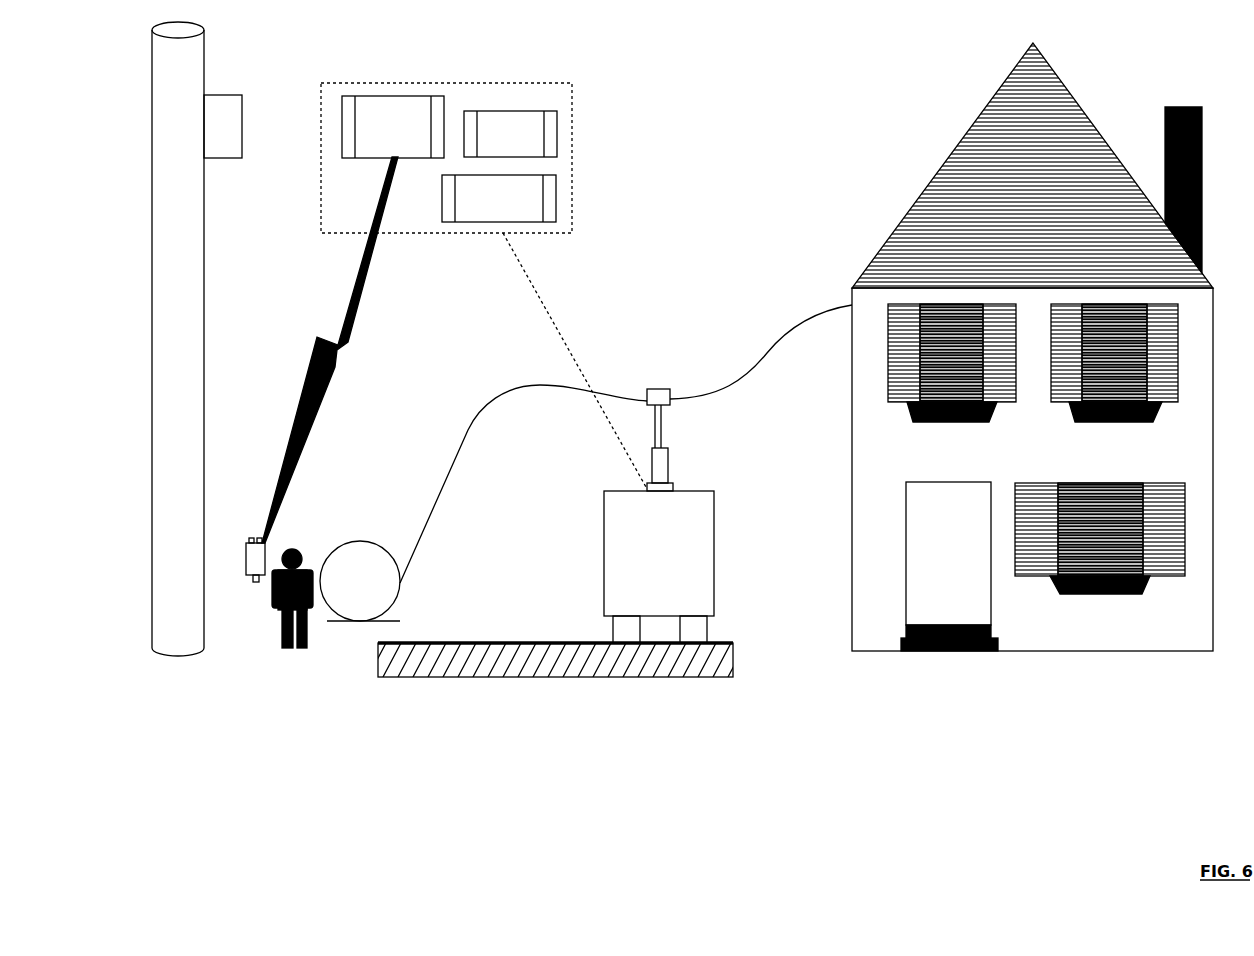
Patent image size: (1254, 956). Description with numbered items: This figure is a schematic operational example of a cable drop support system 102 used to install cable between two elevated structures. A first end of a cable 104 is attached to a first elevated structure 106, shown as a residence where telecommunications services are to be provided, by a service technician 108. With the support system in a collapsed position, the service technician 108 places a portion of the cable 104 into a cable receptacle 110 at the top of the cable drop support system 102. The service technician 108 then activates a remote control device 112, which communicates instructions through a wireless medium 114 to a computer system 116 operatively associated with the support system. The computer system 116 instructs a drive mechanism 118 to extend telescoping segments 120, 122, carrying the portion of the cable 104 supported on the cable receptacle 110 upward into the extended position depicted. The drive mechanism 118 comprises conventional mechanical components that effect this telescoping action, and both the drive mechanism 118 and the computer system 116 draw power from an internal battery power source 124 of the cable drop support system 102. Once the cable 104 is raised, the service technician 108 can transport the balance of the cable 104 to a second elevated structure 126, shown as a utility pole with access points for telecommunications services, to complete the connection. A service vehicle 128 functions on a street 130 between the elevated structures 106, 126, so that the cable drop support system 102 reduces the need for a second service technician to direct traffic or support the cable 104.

The cable drop support system 102 is at (717, 484).
The cable 104 is at (764, 357).
The first elevated structure 106 is at (947, 155).
The service technician 108 is at (308, 540).
The cable receptacle 110 is at (657, 389).
The remote control device 112 is at (251, 541).
The wireless medium 114 is at (290, 372).
The computer system 116 is at (414, 96).
The drive mechanism 118 is at (557, 196).
The telescoping segment 120 is at (669, 466).
The telescoping segment 122 is at (662, 428).
The internal battery power source 124 is at (546, 111).
The second elevated structure 126 is at (152, 108).
The service vehicle 128 is at (716, 545).
The street 130 is at (460, 680).